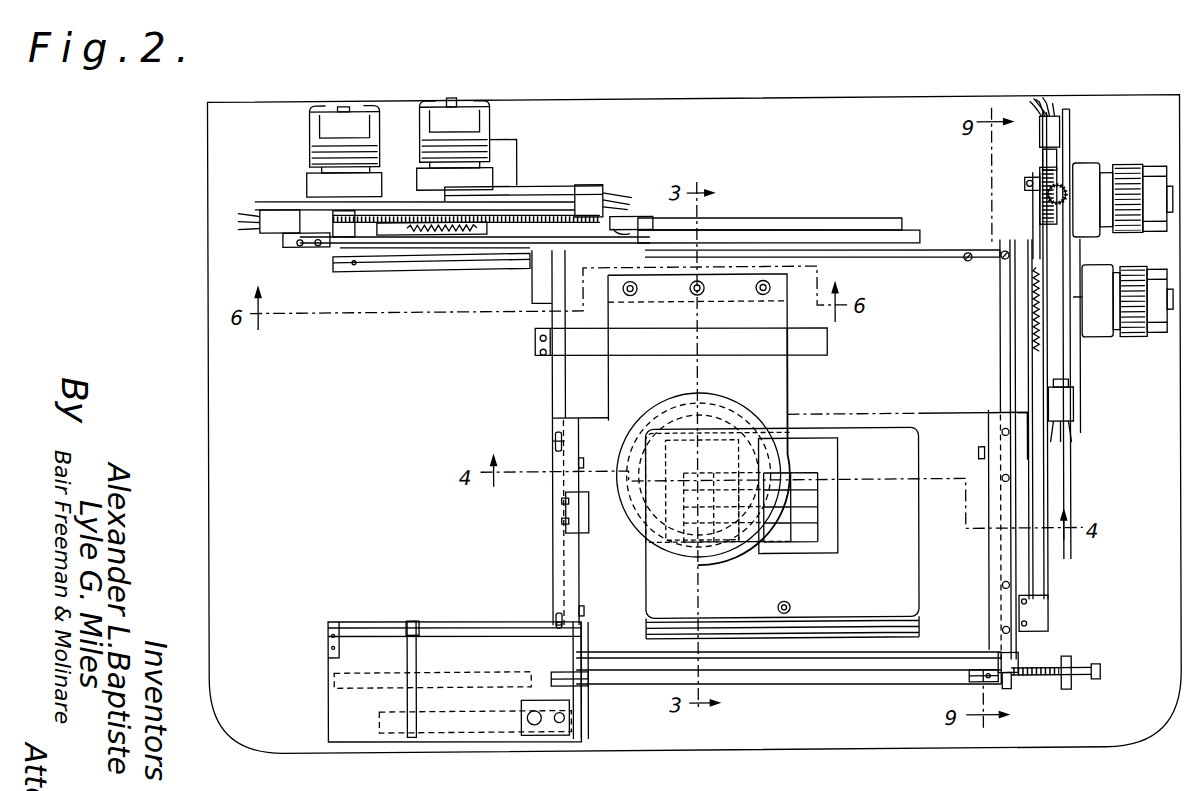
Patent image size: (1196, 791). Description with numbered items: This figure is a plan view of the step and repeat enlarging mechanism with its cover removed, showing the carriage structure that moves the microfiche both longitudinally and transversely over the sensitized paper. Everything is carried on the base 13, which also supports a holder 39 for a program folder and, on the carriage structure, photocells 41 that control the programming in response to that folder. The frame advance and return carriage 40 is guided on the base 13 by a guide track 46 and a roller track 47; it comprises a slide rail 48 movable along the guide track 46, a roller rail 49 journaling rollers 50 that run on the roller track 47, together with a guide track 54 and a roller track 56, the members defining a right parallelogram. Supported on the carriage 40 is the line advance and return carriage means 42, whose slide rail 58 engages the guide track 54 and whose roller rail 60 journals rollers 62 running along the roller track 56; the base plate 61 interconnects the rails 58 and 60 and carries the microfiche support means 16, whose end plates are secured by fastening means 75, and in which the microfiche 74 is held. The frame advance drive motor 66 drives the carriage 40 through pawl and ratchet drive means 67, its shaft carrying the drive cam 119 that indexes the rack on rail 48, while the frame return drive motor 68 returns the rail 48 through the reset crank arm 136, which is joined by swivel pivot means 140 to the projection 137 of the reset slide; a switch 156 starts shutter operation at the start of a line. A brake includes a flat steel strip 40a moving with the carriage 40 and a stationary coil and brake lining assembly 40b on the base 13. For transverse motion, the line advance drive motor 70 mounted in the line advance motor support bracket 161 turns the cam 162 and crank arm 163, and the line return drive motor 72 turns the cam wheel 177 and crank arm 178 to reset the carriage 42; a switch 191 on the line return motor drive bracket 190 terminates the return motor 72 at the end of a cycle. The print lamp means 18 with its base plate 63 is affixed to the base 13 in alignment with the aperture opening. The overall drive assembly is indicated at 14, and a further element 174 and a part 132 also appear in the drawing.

The base 13 is at (333, 527).
The drive assembly 14 is at (1026, 84).
The microfiche support means 16 is at (928, 575).
The print lamp means 18 is at (748, 394).
The holder 39 is at (335, 704).
The frame advance and return carriage 40 is at (554, 166).
The flat steel strip 40a is at (585, 356).
The coil and brake lining assembly 40b is at (697, 347).
The photocells 41 is at (546, 735).
The line advance and return carriage means 42 is at (1125, 370).
The guide track 46 is at (430, 265).
The roller track 47 is at (384, 583).
The slide rail 48 is at (943, 259).
The roller rail 49 is at (825, 678).
The rollers 50 is at (587, 682).
The guide track 54 is at (1000, 319).
The roller track 56 is at (557, 372).
The slide rail 58 is at (1000, 450).
The roller rail 60 is at (555, 545).
The base plate 61 is at (950, 470).
The rollers 62 is at (553, 437).
The base plate 63 is at (642, 405).
The frame advance drive motor 66 is at (310, 158).
The pawl and ratchet drive means 67 is at (525, 252).
The frame return drive motor 68 is at (487, 138).
The line advance drive motor 70 is at (1113, 172).
The line return drive motor 72 is at (1127, 340).
The microfiche 74 is at (812, 538).
The fastening means 75 is at (582, 457).
The drive cam 119 is at (333, 244).
The switch 132 is at (284, 230).
The reset crank arm 136 is at (518, 226).
The projection 137 is at (618, 222).
The swivel pivot means 140 is at (614, 205).
The switch 156 is at (608, 183).
The line advance motor support bracket 161 is at (1062, 128).
The cam 162 is at (1043, 170).
The crank arm 163 is at (1033, 236).
The leads 174 is at (1057, 125).
The cam wheel 177 is at (1053, 340).
The crank arm 178 is at (1038, 495).
The line return motor drive bracket 190 is at (1073, 260).
The switch 191 is at (1066, 410).